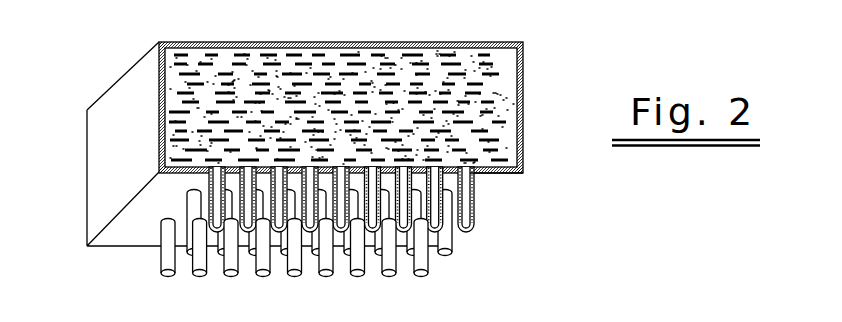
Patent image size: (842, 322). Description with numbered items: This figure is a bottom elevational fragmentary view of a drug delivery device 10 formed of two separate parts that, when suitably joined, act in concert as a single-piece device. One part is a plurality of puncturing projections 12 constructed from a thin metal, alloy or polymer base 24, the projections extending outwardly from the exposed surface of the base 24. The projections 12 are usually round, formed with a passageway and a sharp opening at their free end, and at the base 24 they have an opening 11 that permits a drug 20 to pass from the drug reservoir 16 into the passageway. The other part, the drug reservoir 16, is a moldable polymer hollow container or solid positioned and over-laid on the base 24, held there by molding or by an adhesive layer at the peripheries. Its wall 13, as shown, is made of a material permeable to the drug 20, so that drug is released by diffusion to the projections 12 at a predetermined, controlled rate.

The drug delivery device 10 is at (315, 104).
The opening 11 is at (215, 162).
The puncturing projections 12 is at (289, 223).
The wall 13 is at (486, 176).
The drug reservoir 16 is at (166, 117).
The drug 20 is at (325, 82).
The base 24 is at (213, 166).